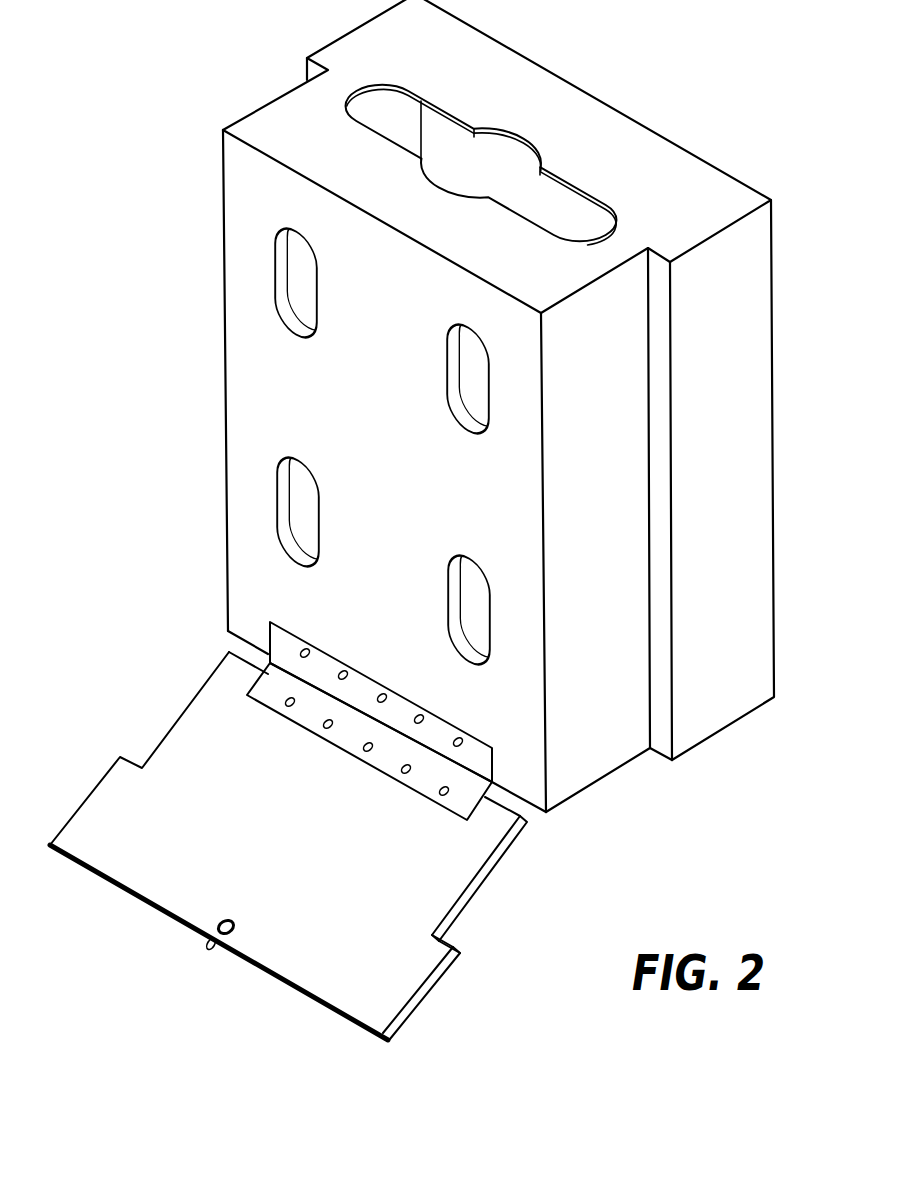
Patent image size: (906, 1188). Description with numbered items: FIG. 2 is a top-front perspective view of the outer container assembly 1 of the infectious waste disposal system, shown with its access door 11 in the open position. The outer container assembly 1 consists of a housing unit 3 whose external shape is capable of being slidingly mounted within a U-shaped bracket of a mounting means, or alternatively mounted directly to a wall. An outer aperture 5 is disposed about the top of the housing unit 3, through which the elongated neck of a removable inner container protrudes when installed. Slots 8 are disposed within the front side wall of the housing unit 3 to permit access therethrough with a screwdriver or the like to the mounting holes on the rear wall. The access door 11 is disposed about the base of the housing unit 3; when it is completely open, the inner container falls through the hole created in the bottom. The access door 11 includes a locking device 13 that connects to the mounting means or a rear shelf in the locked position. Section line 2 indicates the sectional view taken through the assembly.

The outer container assembly 1 is at (598, 792).
The section line 2- 2 is at (657, 128).
The housing unit 3 is at (367, 465).
The outer aperture 5 is at (439, 141).
The slots 8 is at (317, 277).
The access door 11 is at (428, 977).
The locking device 13 is at (224, 918).